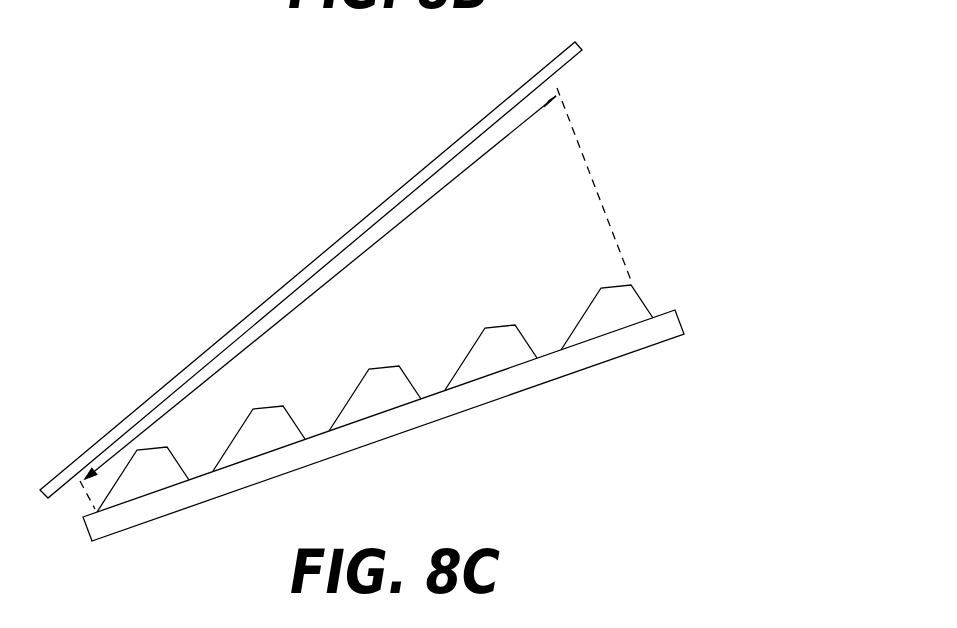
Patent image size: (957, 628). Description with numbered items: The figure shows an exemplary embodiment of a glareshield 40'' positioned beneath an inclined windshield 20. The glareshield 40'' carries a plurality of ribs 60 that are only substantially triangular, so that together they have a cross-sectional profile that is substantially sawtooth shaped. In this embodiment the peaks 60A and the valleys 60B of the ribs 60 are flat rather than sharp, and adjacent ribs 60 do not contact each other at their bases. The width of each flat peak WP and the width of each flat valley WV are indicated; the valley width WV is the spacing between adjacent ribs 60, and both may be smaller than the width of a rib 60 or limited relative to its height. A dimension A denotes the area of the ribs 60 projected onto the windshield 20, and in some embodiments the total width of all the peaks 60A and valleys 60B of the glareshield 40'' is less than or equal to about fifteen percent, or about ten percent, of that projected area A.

The windshield 20 is at (578, 43).
The area of the ribs projected on the windshield A is at (316, 289).
The glareshield 40'' is at (435, 393).
The rib 60 is at (633, 283).
The peak 60A is at (270, 404).
The valley 60B is at (316, 437).
The width of each valley WV is at (428, 390).
The width of each peak WP is at (501, 314).